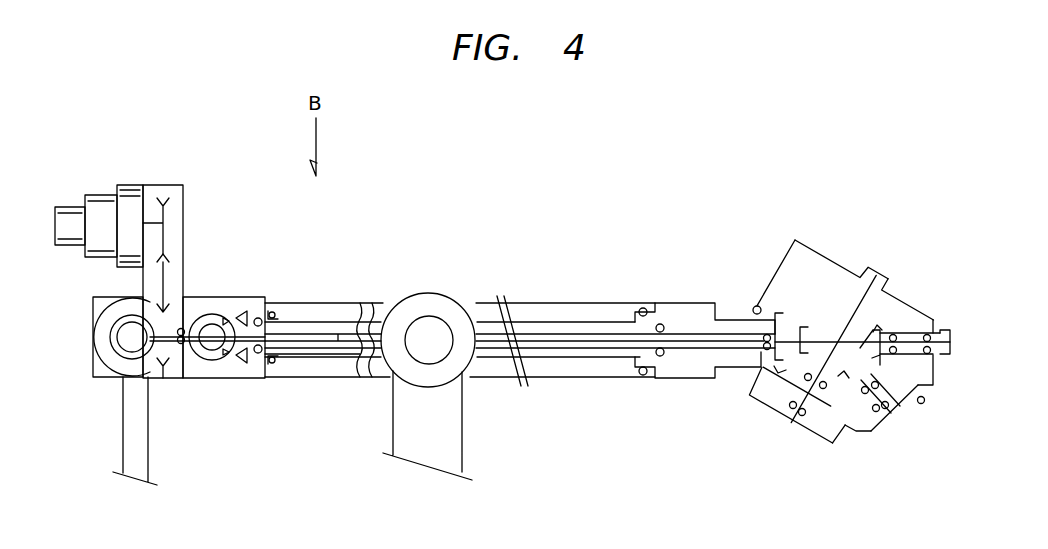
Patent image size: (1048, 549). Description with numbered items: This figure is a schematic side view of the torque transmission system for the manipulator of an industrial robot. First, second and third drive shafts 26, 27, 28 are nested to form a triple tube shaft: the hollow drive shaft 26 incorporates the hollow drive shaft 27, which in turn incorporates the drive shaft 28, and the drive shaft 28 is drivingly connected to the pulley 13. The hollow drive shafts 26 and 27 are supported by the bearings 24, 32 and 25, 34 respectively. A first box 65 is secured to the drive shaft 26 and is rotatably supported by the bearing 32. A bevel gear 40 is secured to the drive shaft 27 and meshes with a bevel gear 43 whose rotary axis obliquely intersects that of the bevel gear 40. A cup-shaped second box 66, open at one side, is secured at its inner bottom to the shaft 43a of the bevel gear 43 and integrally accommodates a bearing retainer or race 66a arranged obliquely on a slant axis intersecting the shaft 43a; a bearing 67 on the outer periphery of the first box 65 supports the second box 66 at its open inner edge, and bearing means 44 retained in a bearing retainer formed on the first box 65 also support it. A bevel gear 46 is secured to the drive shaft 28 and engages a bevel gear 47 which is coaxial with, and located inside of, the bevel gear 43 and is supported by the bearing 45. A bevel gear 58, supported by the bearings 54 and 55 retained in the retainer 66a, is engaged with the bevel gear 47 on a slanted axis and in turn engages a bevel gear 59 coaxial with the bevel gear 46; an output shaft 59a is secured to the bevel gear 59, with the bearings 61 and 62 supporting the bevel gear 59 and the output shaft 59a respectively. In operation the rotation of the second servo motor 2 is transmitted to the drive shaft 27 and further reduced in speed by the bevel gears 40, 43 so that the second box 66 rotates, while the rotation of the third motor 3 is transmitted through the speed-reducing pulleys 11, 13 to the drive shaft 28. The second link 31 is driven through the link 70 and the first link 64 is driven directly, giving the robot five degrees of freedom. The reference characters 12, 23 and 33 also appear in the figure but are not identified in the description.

The second servo motor 2 is at (113, 345).
The third motor 3 is at (130, 195).
The pulley 11 is at (168, 210).
The passage 12 is at (165, 266).
The pulley 13 is at (166, 358).
The seal rings 23 is at (177, 331).
The bearing 24 is at (272, 364).
The bearing 25 is at (257, 353).
The first drive shaft 26 is at (293, 318).
The second drive shaft 27 is at (309, 322).
The third drive shaft 28 is at (341, 334).
The second link 31 is at (482, 306).
The bearing 32 is at (643, 307).
The seal rings 33 is at (763, 351).
The bearing 34 is at (662, 323).
The bevel gear 40 is at (771, 286).
The bevel gear 43 is at (822, 412).
The shaft 43a is at (893, 292).
The bearing means 44 is at (800, 415).
The bearing 45 is at (789, 408).
The bevel gear 46 is at (813, 332).
The bevel gear 47 is at (843, 436).
The bearing 54 is at (922, 405).
The bearing 55 is at (890, 412).
The bevel gear 58 is at (871, 434).
The bevel gear 59 is at (888, 321).
The output shaft 59a is at (950, 331).
The bearing 61 is at (928, 356).
The bearing 62 is at (900, 336).
The first link 64 is at (463, 433).
The first box 65 is at (667, 380).
The second box 66 is at (847, 268).
The bearing retainer 66a is at (889, 436).
The bearing 67 is at (758, 304).
The link 70 is at (118, 444).